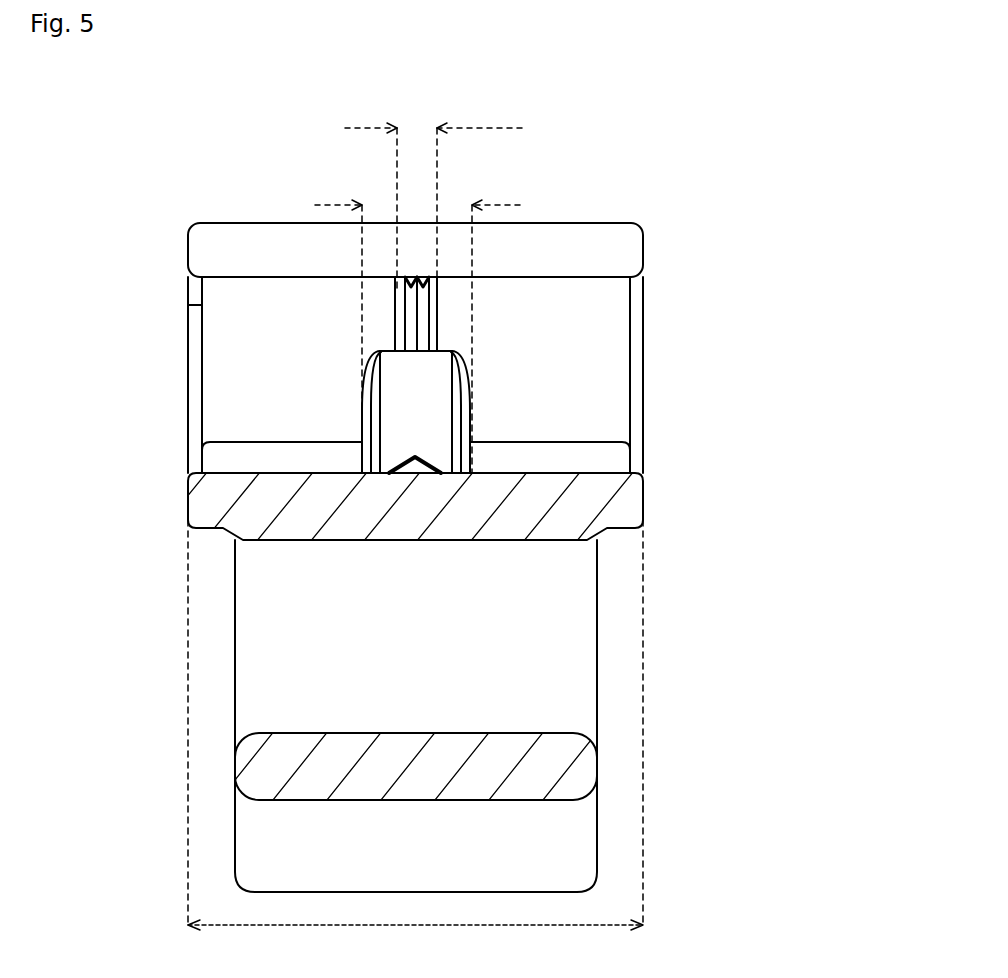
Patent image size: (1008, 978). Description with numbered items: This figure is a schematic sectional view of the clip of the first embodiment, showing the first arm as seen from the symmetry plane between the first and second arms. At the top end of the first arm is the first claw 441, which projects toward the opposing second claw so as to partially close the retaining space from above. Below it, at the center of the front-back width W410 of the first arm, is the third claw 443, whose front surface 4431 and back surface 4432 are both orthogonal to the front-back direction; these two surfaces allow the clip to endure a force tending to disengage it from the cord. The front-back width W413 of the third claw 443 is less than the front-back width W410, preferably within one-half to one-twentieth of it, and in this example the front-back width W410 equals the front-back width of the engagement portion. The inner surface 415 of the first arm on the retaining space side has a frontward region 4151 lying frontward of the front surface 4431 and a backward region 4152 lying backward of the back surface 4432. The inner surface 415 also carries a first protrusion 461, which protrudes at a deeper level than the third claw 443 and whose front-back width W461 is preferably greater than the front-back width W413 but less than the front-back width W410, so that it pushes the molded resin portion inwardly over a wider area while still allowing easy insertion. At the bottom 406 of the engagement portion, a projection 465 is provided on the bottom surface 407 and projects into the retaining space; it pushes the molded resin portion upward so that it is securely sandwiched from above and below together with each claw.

The first claw 441 is at (598, 242).
The third claw 443 is at (524, 245).
The front surface 4431 is at (393, 287).
The back surface 4432 is at (440, 300).
The inner surface 415 is at (470, 375).
The frontward region 4151 is at (257, 337).
The backward region 4152 is at (612, 367).
The first protrusion 461 is at (435, 397).
The projection 465 is at (417, 460).
The bottom surface 407 is at (558, 472).
The bottom 406 is at (625, 508).
The front-back width of the third claw W413 is at (421, 189).
The front-back width of the first protrusion W461 is at (380, 324).
The front-back width of the first arm W410 is at (415, 743).